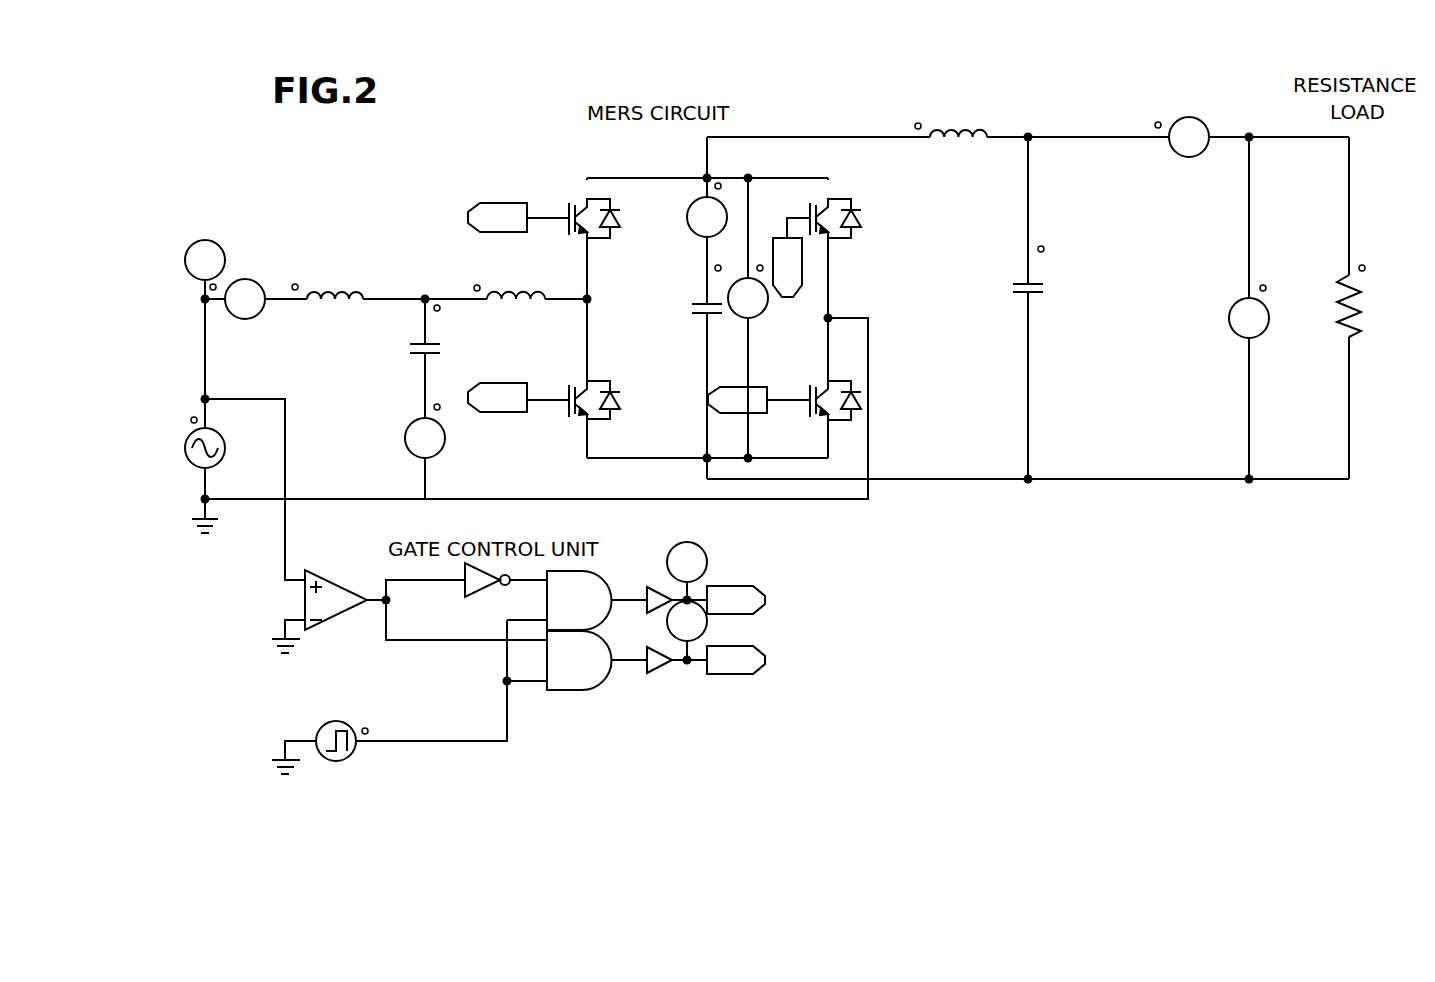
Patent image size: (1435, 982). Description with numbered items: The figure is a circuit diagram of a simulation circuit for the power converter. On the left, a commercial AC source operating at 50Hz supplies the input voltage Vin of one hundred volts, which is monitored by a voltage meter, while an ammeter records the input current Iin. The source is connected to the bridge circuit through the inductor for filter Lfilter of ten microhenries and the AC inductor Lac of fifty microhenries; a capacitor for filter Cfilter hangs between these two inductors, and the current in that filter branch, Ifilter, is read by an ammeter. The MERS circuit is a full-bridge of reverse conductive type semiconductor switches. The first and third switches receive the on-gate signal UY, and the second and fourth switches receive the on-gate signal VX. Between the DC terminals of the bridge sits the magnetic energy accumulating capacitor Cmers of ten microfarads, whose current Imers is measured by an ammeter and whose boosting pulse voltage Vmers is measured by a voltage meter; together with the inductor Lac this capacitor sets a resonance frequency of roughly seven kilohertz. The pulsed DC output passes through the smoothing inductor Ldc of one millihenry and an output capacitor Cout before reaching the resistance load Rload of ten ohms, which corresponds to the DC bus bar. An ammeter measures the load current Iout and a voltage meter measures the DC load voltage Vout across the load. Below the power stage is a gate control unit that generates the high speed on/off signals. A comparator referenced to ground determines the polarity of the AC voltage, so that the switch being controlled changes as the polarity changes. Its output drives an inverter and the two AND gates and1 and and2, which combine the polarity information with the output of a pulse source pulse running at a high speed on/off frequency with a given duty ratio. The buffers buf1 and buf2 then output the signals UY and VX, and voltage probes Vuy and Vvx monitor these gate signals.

The input voltage Vin is at (205, 246).
The input current meter Iin is at (245, 299).
The AC source 50Hz is at (175, 448).
The inductor for filter Lfilter is at (337, 268).
The capacitor for filter Cfilter is at (456, 349).
The current flowing through filter Ifilter is at (476, 444).
The inductor Lac is at (515, 270).
The on-gate signal for reverse conductive type semiconductor switch SW1, SW3 UY is at (664, 309).
The on-gate signal for reverse conductive type semiconductor switch SW2, SW4 VX is at (664, 309).
The current flowing through magnetic energy accumulating capacitor Imers is at (686, 227).
The MERS capacitor Cmers is at (683, 298).
The voltage of magnetic energy accumulating capacitor Vmers is at (772, 310).
The smoothing inductor Ldc is at (958, 105).
The output filter capacitor Cout is at (1003, 303).
The current flowing through resistance load Iout is at (1189, 125).
The voltage applied across resistance load Vout is at (1222, 311).
The resistance load Rload is at (1383, 307).
The element comparator is at (336, 600).
The element inverter is at (487, 580).
The AND gate and1 is at (579, 600).
The AND gate and2 is at (579, 660).
The buffer buf1 is at (659, 600).
The buffer buf2 is at (659, 660).
The pulse source pulse is at (305, 729).
The UY voltage probe Vuy is at (716, 578).
The VX voltage probe Vvx is at (716, 637).